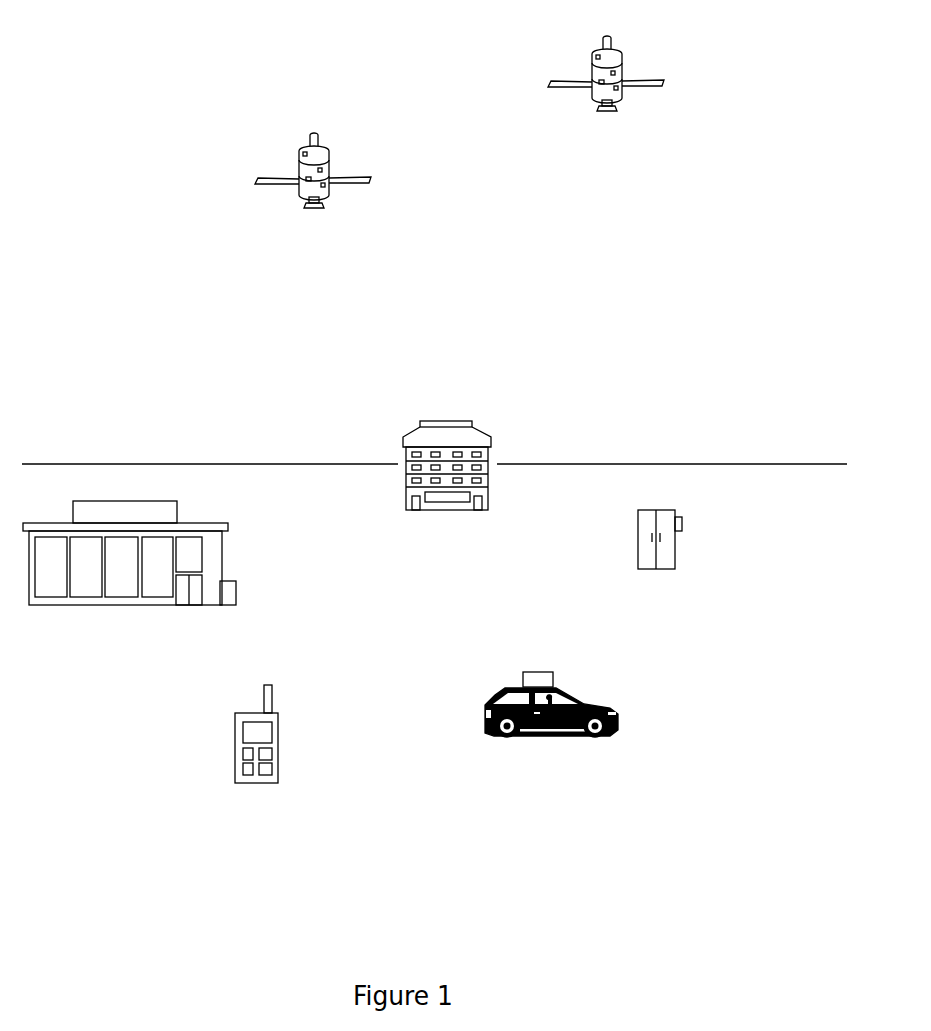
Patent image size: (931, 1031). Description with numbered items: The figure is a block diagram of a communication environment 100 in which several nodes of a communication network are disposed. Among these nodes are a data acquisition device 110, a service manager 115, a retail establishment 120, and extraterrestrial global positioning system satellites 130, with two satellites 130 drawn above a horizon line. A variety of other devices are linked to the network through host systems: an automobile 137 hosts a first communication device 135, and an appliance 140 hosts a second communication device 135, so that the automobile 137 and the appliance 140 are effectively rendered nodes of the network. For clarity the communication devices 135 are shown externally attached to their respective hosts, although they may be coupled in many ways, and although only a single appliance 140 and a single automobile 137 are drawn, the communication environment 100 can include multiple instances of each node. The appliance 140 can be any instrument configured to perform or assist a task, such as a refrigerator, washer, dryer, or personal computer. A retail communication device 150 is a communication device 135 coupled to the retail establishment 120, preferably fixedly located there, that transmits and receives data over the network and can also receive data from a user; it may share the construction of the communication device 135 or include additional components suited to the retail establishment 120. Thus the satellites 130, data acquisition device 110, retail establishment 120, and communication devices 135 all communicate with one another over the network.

The communication environment 100 is at (323, 25).
The data acquisition device 110 is at (258, 761).
The service manager 115 is at (446, 493).
The retail establishment 120 is at (126, 566).
The GPS satellites 130 is at (461, 134).
The communication device 135 is at (682, 520).
The automobile 137 is at (550, 725).
The appliance 140 is at (653, 553).
The retail communication device 150 is at (224, 581).